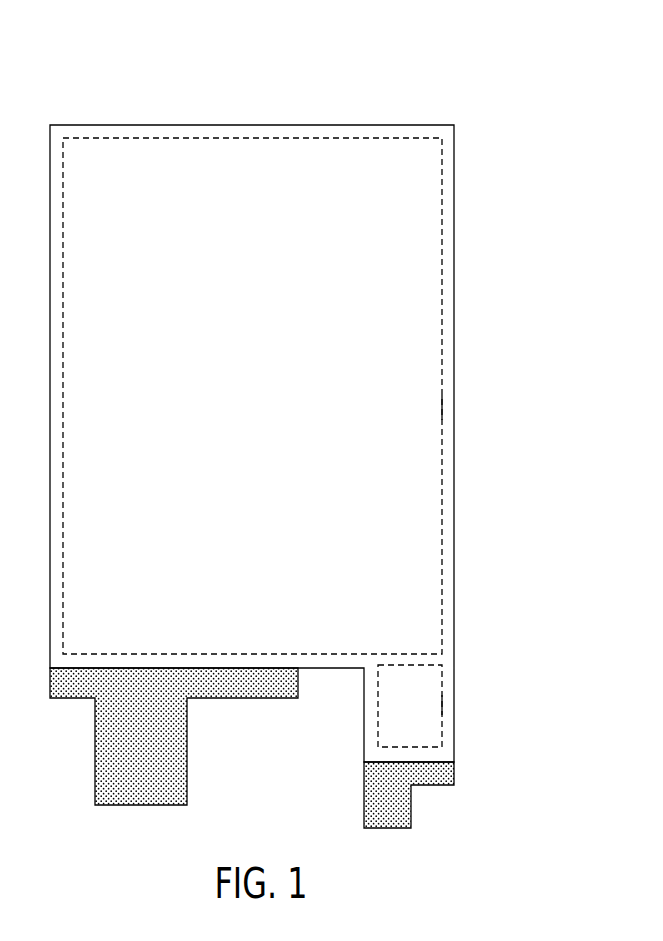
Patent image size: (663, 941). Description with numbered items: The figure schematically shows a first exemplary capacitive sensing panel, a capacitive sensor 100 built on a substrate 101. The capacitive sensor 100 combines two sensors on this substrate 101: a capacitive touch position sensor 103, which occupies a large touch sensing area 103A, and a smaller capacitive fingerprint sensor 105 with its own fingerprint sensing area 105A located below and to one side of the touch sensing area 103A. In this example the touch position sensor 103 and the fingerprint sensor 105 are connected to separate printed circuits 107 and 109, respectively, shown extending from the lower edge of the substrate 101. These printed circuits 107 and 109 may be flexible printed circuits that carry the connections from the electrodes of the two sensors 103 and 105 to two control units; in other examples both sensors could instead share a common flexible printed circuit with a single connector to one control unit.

The capacitive sensor 100 is at (96, 70).
The substrate 101 is at (455, 338).
The capacitive touch position sensor 103 is at (454, 494).
The touch sensing area 103A is at (426, 409).
The capacitive fingerprint sensor 105 is at (448, 723).
The fingerprint sensing area 105A is at (426, 702).
The printed circuit 107 is at (103, 772).
The printed circuit 109 is at (408, 806).